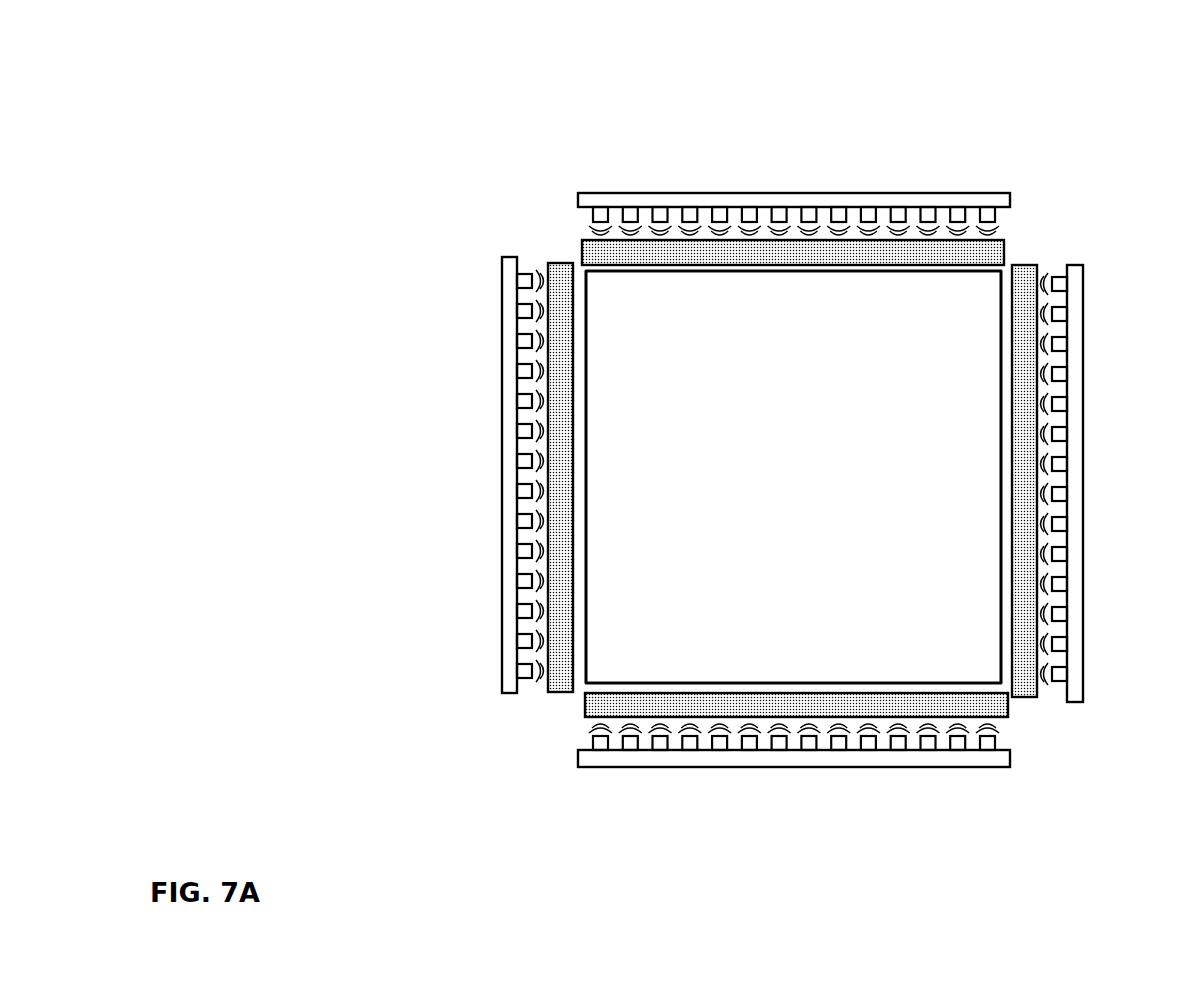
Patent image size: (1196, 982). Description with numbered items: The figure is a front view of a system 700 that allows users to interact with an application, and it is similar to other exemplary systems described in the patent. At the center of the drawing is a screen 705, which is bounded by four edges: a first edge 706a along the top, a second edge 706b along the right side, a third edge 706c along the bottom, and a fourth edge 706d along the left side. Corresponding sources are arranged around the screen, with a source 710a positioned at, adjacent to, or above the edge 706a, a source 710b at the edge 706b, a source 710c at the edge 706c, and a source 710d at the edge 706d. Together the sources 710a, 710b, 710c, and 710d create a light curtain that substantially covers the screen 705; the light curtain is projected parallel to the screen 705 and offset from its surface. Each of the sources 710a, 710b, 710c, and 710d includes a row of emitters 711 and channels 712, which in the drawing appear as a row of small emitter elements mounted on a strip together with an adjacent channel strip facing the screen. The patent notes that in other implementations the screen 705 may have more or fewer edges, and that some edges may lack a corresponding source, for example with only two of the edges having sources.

The system 700 is at (825, 43).
The screen 705 is at (793, 477).
The edge 706a is at (772, 271).
The edge 706b is at (1001, 420).
The edge 706c is at (758, 683).
The edge 706d is at (587, 475).
The source 710a is at (816, 216).
The source 710b is at (1092, 423).
The source 710c is at (1038, 762).
The source 710d is at (480, 567).
The emitters 711 is at (593, 213).
The channels 712 is at (593, 253).